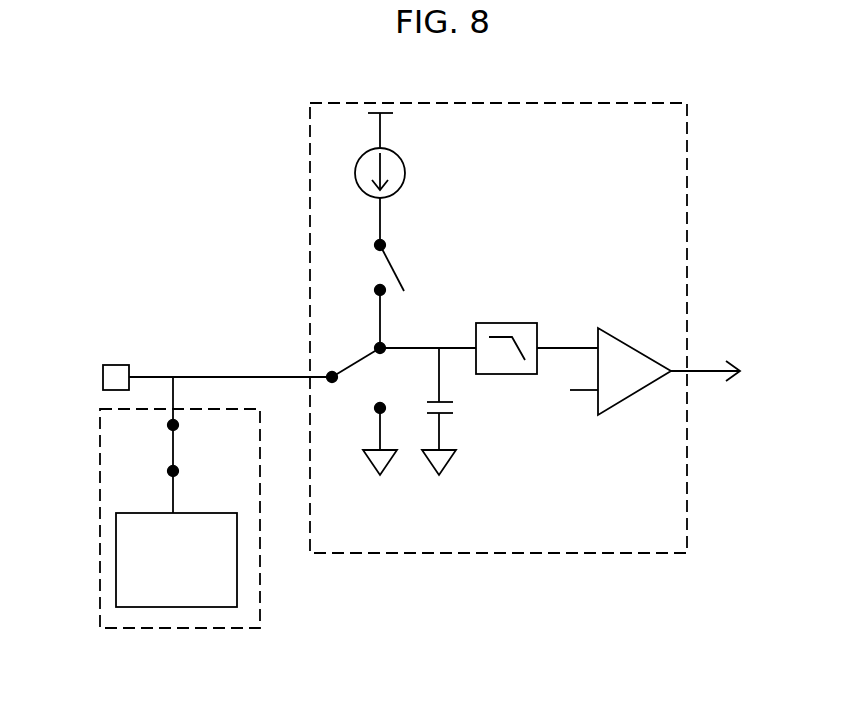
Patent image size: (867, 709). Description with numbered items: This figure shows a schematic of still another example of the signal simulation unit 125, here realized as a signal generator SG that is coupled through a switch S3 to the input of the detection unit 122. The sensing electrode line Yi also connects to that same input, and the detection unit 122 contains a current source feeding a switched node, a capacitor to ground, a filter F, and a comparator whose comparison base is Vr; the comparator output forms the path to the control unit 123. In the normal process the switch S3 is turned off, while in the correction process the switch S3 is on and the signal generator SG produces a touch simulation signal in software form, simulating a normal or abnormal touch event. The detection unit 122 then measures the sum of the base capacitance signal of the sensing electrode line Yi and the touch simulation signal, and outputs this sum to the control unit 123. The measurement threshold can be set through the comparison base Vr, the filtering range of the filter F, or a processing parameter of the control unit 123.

The detection unit 122 is at (498, 362).
The control unit 123 is at (797, 387).
The signal simulation unit 125 is at (197, 530).
The sensing electrode line Yi is at (103, 385).
The switch S3 is at (173, 447).
The filter F is at (500, 323).